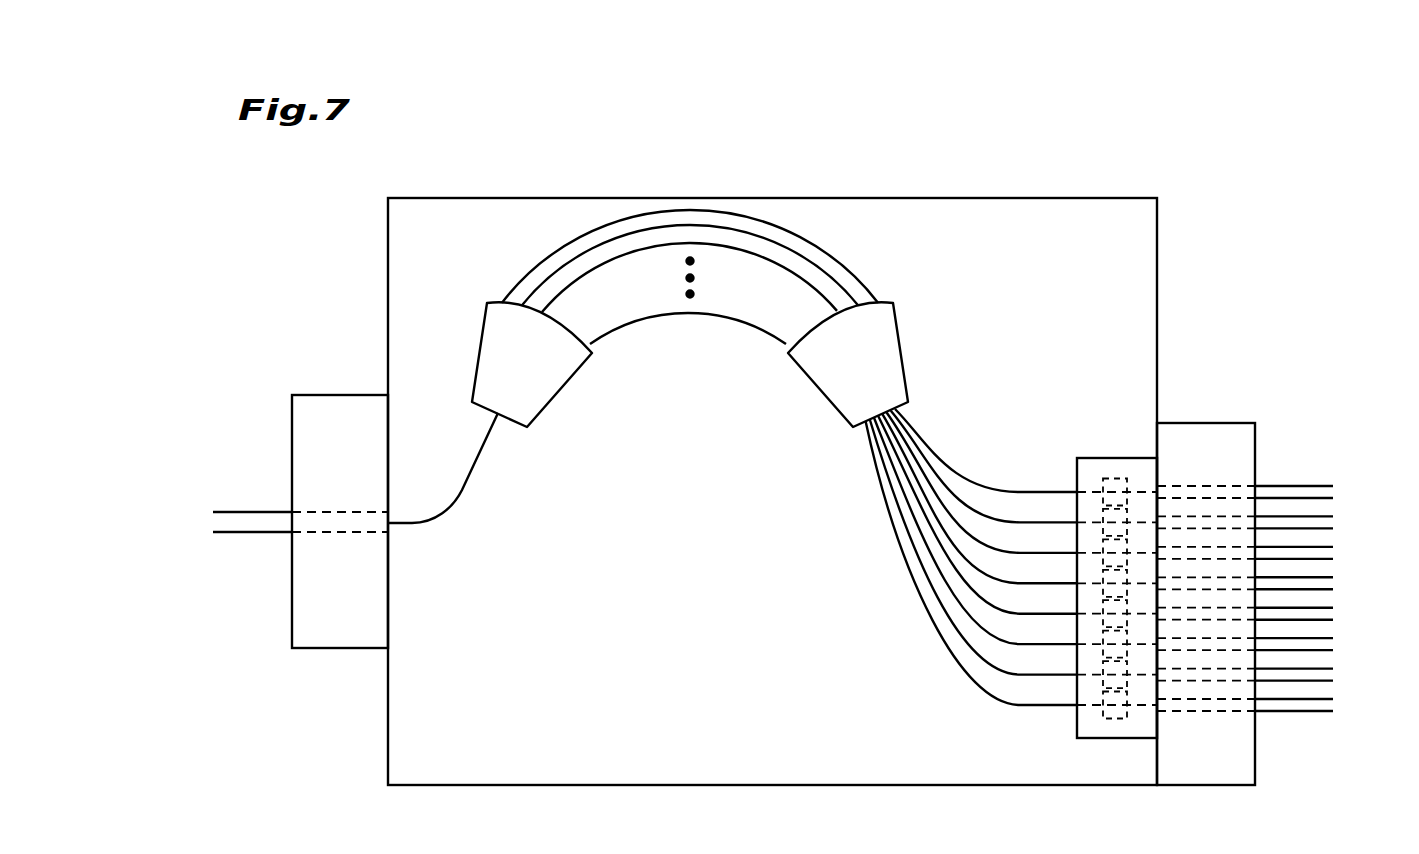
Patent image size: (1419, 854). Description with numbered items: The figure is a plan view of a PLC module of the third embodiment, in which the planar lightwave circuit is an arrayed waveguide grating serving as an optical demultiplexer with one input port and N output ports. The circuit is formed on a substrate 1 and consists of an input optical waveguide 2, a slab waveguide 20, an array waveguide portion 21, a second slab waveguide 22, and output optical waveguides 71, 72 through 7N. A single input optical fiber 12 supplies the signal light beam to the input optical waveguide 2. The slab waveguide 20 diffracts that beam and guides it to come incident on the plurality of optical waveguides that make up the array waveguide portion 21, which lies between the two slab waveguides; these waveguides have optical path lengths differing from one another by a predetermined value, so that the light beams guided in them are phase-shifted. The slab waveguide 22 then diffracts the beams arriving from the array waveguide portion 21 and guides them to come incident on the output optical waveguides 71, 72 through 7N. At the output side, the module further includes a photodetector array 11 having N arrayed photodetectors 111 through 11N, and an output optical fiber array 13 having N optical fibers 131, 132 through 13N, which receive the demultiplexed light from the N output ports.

The substrate 1 is at (973, 198).
The input optical waveguide 2 is at (462, 491).
The input optical fiber 12 is at (228, 511).
The slab waveguide 20 is at (540, 415).
The array waveguide portion 21 is at (687, 316).
The slab waveguide 22 is at (830, 405).
The output optical waveguide 71 is at (930, 448).
The output optical waveguide 72 is at (990, 512).
The output optical waveguide 7N is at (967, 673).
The photodetector array 11 is at (1117, 458).
The photodetector 111 is at (1112, 478).
The photodetector 11N is at (1113, 719).
The output optical fiber array 13 is at (1208, 423).
The optical fiber 131 is at (1323, 487).
The optical fiber 132 is at (1325, 518).
The optical fiber 13N is at (1323, 699).